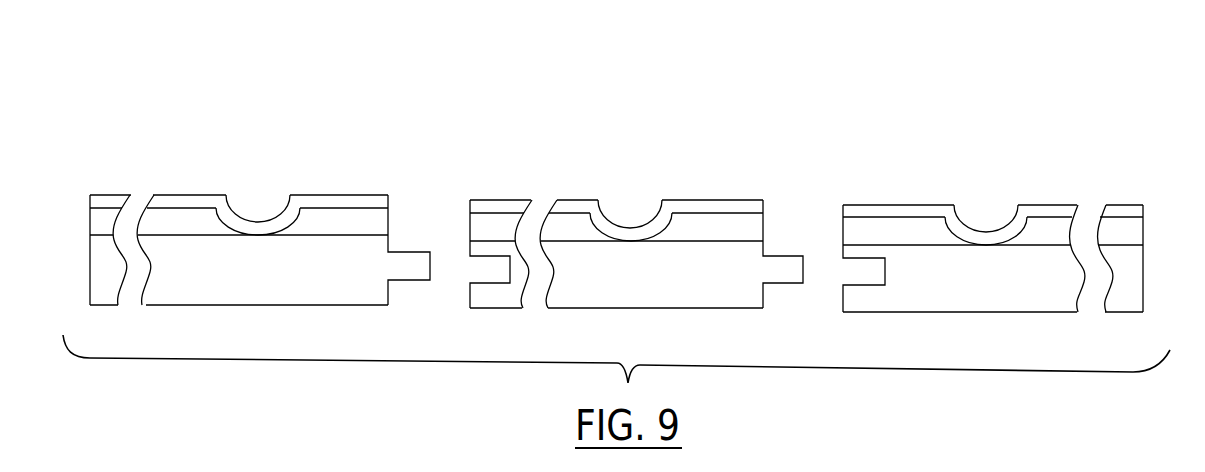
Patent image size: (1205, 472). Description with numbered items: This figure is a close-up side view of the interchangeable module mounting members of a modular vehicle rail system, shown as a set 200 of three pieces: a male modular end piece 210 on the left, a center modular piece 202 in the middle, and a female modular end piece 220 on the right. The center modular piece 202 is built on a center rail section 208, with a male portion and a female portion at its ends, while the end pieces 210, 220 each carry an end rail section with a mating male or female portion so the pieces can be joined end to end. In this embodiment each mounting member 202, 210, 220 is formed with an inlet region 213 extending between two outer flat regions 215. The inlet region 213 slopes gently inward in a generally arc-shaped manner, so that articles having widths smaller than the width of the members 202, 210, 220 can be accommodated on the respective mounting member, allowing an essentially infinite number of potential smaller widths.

The laminate structure 200 is at (642, 68).
The center modular piece 202 is at (636, 146).
The center rail section 208 is at (667, 308).
The male modular end piece 210 is at (274, 116).
The inlet region 213 is at (247, 218).
The outer flat regions 215 is at (183, 195).
The female modular end piece 220 is at (990, 153).